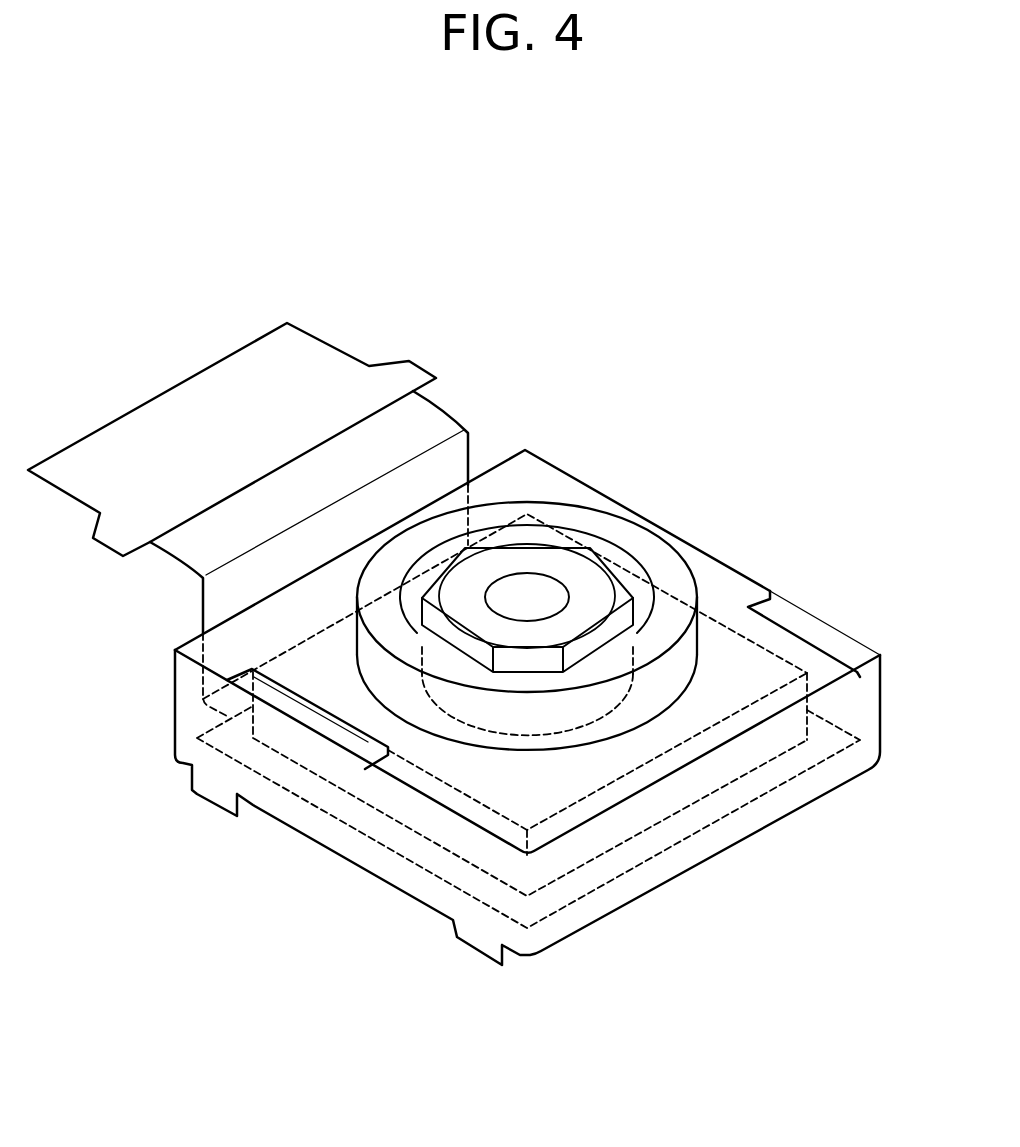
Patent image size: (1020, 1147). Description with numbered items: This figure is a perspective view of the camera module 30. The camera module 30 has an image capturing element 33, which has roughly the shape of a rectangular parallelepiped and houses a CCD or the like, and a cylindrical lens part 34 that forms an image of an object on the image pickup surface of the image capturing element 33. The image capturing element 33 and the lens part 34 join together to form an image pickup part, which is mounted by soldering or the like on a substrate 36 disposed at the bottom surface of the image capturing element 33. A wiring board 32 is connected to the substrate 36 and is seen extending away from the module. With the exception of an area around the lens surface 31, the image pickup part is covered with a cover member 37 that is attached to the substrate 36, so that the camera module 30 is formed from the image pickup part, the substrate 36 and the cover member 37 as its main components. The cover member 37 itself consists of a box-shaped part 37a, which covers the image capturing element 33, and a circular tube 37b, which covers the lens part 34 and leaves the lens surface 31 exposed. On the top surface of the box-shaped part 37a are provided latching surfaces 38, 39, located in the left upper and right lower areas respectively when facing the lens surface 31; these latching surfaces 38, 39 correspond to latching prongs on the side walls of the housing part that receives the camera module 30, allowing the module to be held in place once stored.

The camera module 30 is at (645, 404).
The lens surface 31 is at (527, 587).
The wiring board 32 is at (176, 403).
The image capturing element 33 is at (717, 620).
The lens part 34 is at (625, 570).
The substrate 36 is at (790, 780).
The cover member 37 is at (703, 863).
The box-shaped part 37a is at (417, 885).
The circular tube 37b is at (440, 717).
The latching surface 38 is at (300, 720).
The latching surface 39 is at (841, 640).